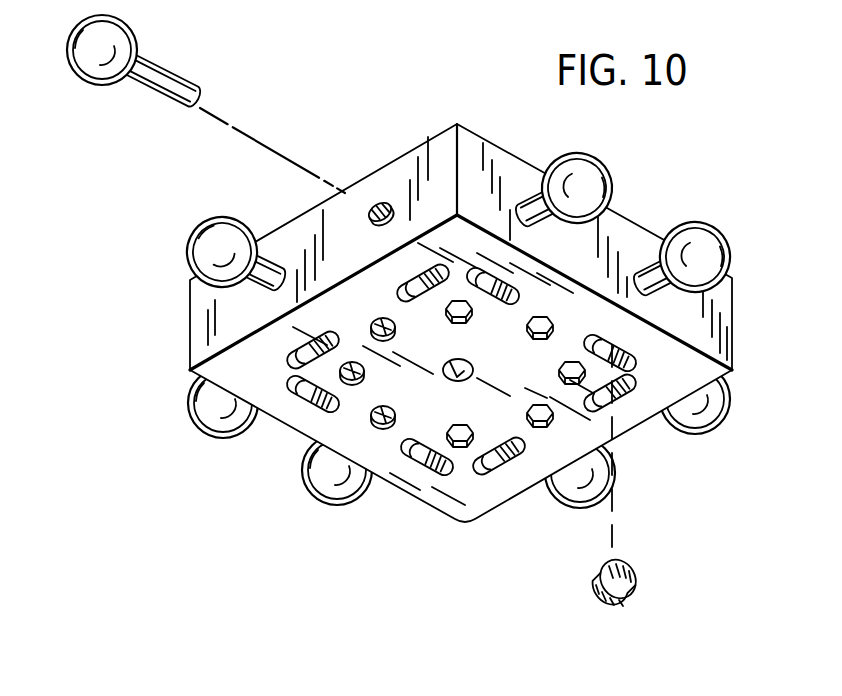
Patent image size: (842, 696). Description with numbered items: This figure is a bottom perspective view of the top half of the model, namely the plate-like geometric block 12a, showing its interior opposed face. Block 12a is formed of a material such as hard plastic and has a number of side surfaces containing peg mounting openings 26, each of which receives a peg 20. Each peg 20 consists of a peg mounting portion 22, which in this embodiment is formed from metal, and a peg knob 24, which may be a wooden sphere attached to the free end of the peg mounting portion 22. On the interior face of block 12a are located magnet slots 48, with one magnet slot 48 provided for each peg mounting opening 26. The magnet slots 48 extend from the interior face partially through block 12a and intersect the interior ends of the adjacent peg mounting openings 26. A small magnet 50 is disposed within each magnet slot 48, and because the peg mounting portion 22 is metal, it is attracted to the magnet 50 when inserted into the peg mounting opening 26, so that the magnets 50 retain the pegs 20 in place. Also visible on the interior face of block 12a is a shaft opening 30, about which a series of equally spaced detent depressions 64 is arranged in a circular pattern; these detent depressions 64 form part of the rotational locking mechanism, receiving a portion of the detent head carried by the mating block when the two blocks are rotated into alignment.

The plate-like geometric block 12a is at (733, 304).
The peg 20 is at (404, 254).
The peg mounting portion 22 is at (164, 82).
The peg knob 24 is at (100, 62).
The peg mounting opening 26 is at (378, 203).
The shaft opening 30 is at (451, 377).
The magnet slot 48 is at (497, 470).
The magnet 50 is at (630, 567).
The detent depression 64 is at (372, 329).